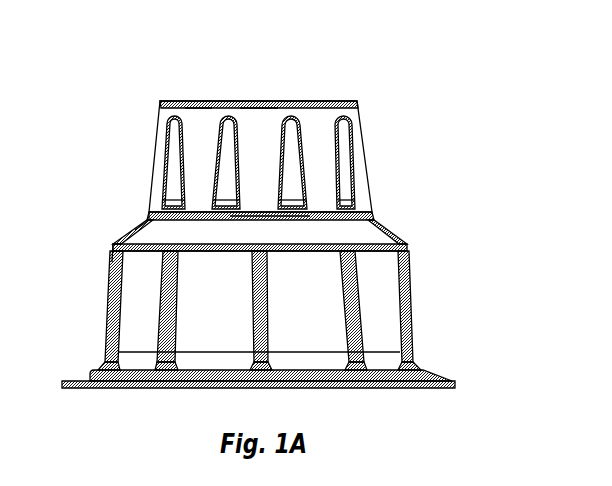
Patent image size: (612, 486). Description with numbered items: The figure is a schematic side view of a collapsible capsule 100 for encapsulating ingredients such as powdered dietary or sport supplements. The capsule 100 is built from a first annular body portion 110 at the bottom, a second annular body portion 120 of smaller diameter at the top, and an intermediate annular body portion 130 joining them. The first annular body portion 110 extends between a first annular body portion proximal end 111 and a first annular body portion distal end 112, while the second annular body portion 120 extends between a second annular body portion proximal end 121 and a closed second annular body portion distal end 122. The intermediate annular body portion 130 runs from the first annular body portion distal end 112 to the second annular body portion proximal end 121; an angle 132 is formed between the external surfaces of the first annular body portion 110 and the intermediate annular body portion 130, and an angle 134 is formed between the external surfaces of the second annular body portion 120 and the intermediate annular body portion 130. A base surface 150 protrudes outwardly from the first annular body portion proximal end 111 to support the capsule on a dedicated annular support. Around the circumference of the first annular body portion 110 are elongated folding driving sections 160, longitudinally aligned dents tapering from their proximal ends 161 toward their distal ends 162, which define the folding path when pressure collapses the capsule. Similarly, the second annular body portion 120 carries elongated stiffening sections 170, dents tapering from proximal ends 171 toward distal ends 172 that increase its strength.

The capsule 100 is at (77, 59).
The first annular body portion 110 is at (286, 317).
The first annular body portion proximal end 111 is at (420, 370).
The first annular body portion distal end 112 is at (395, 255).
The second annular body portion 120 is at (292, 156).
The second annular body portion proximal end 121 is at (374, 218).
The second annular body portion distal end 122 is at (354, 103).
The intermediate annular body portion 130 is at (264, 221).
The angle 132 is at (121, 238).
The angle 134 is at (151, 195).
The base surface 150 is at (455, 387).
The elongated folding driving sections 160 is at (255, 322).
The proximal ends 161 is at (250, 372).
The distal ends 162 is at (255, 247).
The elongated stiffening sections 170 is at (292, 185).
The proximal ends 171 is at (306, 213).
The distal ends 172 is at (282, 114).